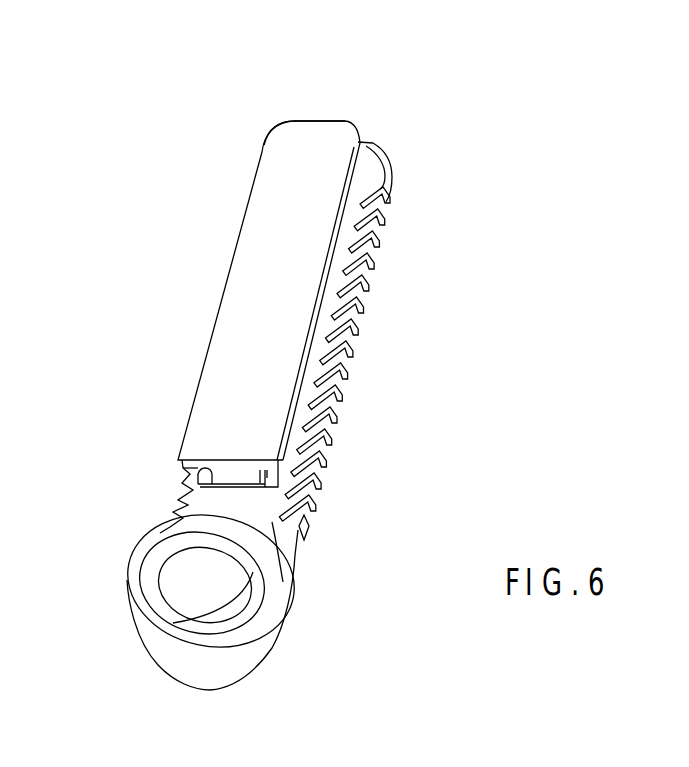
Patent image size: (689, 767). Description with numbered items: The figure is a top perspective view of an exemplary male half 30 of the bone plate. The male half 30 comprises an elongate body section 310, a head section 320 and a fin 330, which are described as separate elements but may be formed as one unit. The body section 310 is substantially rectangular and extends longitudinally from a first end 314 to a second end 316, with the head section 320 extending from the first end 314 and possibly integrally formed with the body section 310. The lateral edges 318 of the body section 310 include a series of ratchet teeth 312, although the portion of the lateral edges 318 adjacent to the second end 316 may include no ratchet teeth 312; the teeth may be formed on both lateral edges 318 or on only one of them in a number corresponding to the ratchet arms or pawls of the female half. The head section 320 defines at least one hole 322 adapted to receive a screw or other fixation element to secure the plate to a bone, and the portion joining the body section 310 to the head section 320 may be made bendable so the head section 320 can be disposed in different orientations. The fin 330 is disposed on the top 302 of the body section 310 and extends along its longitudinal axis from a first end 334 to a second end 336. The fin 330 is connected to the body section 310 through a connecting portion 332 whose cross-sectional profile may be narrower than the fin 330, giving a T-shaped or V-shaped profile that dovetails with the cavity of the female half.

The male half 30 is at (333, 102).
The top 302 is at (264, 525).
The body section 310 is at (352, 347).
The ratchet teeth 312 is at (340, 459).
The first end 314 is at (328, 497).
The second end 316 is at (369, 131).
The lateral edges 318 is at (340, 418).
The head section 320 is at (250, 644).
The hole 322 is at (165, 582).
The fin 330 is at (253, 283).
The connecting portion 332 is at (180, 484).
The first end 334 is at (222, 450).
The second end 336 is at (278, 133).